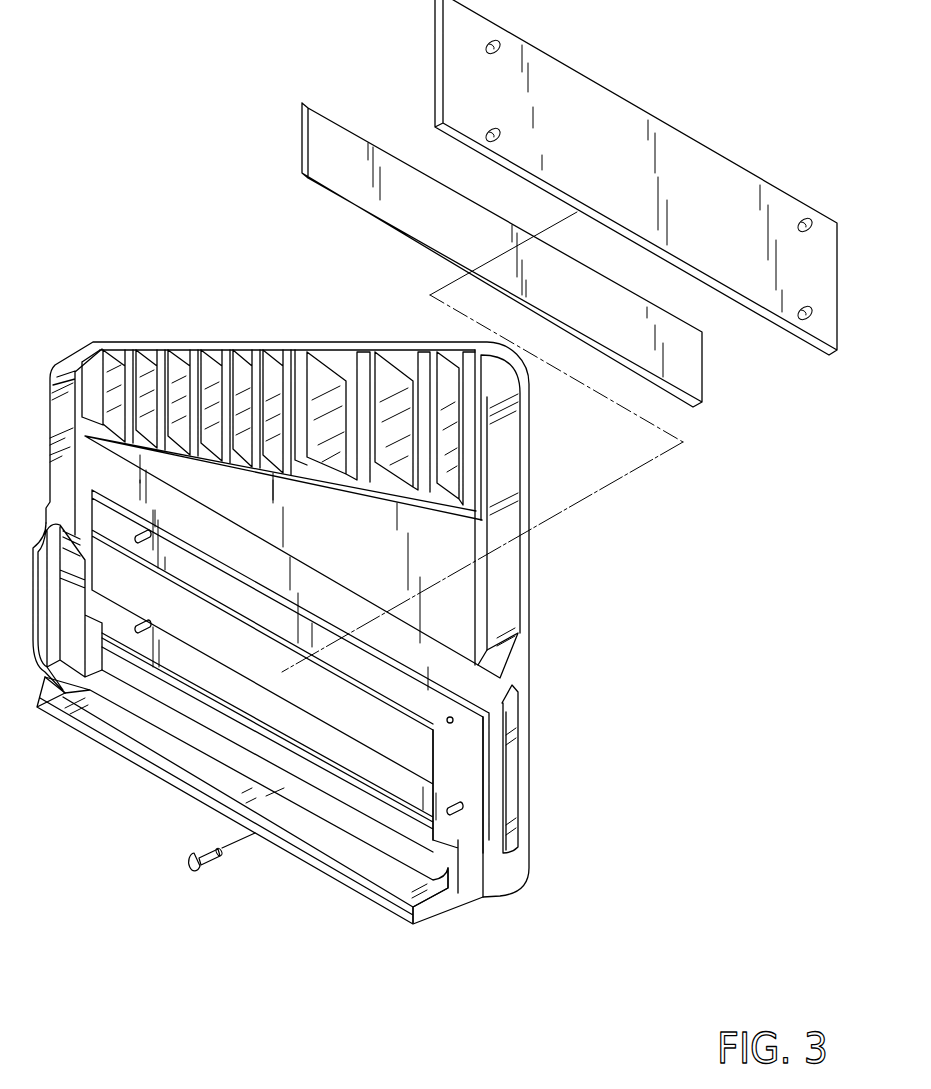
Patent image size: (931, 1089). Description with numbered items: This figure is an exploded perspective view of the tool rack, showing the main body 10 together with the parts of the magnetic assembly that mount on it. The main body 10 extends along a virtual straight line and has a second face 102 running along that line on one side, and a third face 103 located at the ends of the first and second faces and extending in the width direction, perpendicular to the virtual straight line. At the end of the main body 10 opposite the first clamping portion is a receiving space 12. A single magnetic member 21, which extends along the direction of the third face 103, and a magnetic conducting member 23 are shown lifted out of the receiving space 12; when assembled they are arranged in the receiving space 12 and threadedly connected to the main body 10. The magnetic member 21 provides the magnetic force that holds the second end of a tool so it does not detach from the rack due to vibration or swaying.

The main body 10 is at (202, 348).
The receiving space 12 is at (462, 768).
The magnetic member 21 is at (345, 145).
The magnetic conducting member 23 is at (685, 158).
The second face 102 is at (470, 681).
The third face 103 is at (453, 908).